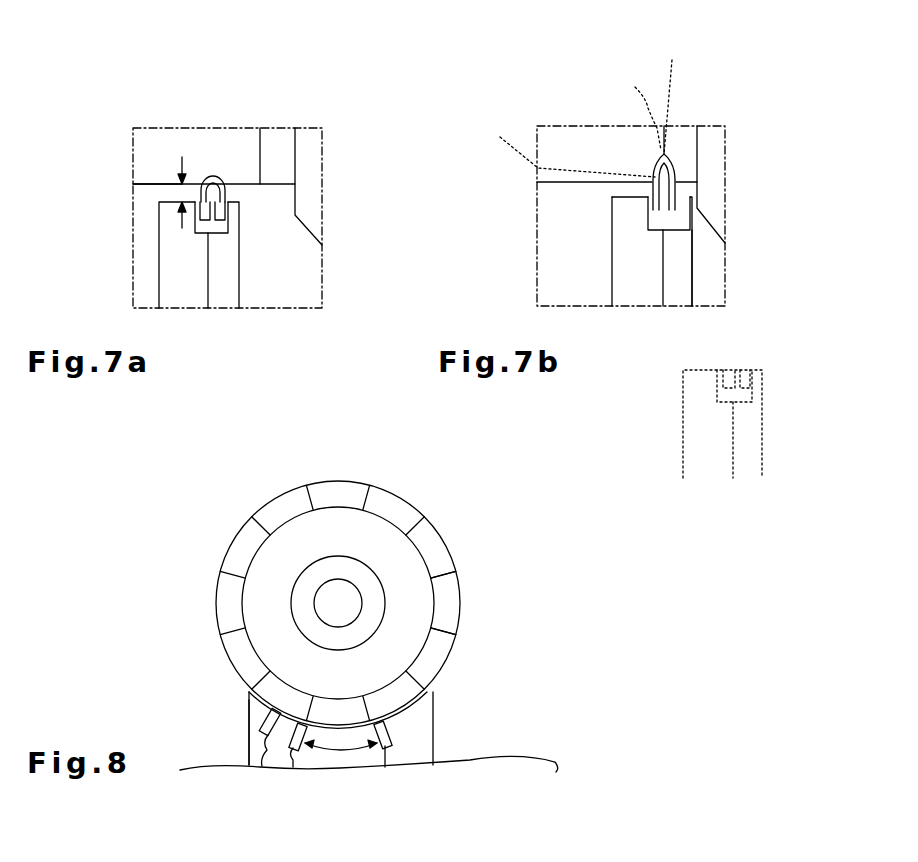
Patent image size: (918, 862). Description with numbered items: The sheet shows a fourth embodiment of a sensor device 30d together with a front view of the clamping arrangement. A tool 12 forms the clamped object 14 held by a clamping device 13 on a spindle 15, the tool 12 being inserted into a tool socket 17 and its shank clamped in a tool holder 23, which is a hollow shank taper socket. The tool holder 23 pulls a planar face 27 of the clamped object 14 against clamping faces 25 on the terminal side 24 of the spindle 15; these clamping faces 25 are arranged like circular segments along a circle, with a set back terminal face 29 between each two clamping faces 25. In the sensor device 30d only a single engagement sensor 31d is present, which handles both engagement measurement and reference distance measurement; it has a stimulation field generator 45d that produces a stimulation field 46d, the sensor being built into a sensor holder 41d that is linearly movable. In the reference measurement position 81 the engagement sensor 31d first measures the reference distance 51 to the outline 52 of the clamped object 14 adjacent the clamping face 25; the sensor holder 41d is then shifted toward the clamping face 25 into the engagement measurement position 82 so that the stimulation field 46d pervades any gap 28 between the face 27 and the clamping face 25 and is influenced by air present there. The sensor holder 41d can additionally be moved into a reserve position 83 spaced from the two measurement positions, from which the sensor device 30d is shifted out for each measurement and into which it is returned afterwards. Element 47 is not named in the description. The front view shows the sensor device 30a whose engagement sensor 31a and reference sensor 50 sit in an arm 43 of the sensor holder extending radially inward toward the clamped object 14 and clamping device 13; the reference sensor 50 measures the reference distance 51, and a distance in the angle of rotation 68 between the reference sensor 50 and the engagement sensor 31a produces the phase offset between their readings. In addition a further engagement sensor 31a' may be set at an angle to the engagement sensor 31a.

In FIG. 7A, the tool 12 is at (143, 157).
In FIG. 7B, the tool 12 is at (548, 157).
In FIG. 7A, the clamping device 13 is at (310, 166).
In FIG. 7B, the clamping device 13 is at (719, 166).
In FIG. 8, the clamping device 13 is at (222, 534).
In FIG. 7A, the clamped object 14 is at (152, 133).
In FIG. 7B, the clamped object 14 is at (557, 131).
In FIG. 8, the spindle 15 is at (462, 540).
In FIG. 8, the tool socket 17 is at (348, 527).
In FIG. 8, the tool holder 23 is at (335, 565).
In FIG. 8, the terminal side 24 is at (448, 603).
In FIG. 7A, the clamping faces 25 is at (260, 128).
In FIG. 7B, the clamping faces 25 is at (665, 128).
In FIG. 8, the clamping faces 25 is at (410, 500).
In FIG. 7B, the face of the clamped object 27 is at (633, 109).
In FIG. 7B, the gap 28 is at (675, 97).
In FIG. 8, the set back terminal face 29 is at (357, 482).
In FIG. 8, the sensor device 30a is at (440, 724).
In FIG. 7A, the sensor device 30d is at (158, 248).
In FIG. 7B, the sensor device 30d is at (696, 302).
In FIG. 8, the engagement sensor 31a is at (279, 766).
In FIG. 8, the engagement sensor 31a' is at (233, 758).
In FIG. 7A, the engagement sensor 31d is at (225, 223).
In FIG. 7B, the engagement sensor 31d is at (675, 228).
In FIG. 7A, the sensor holder 41d is at (229, 305).
In FIG. 7B, the sensor holder 41d is at (620, 252).
In FIG. 8, the arm 43 is at (247, 733).
In FIG. 7A, the stimulation field generator 45d is at (203, 222).
In FIG. 7B, the stimulation field generator 45d is at (651, 230).
In FIG. 7B, the stimulation field 46d is at (672, 168).
In FIG. 7A, the spring 47 is at (223, 203).
In FIG. 7B, the spring 47 is at (670, 208).
In FIG. 8, the reference sensor 50 is at (404, 764).
In FIG. 7A, the reference distance 51 is at (167, 194).
In FIG. 7A, the outline of the clamped object 52 is at (190, 193).
In FIG. 8, the distance in the angle of rotation 68 is at (348, 752).
In FIG. 7A, the reference measurement position 81 is at (241, 275).
In FIG. 7B, the engagement measurement position 82 is at (640, 300).
In FIG. 7B, the reserve position 83 is at (675, 393).